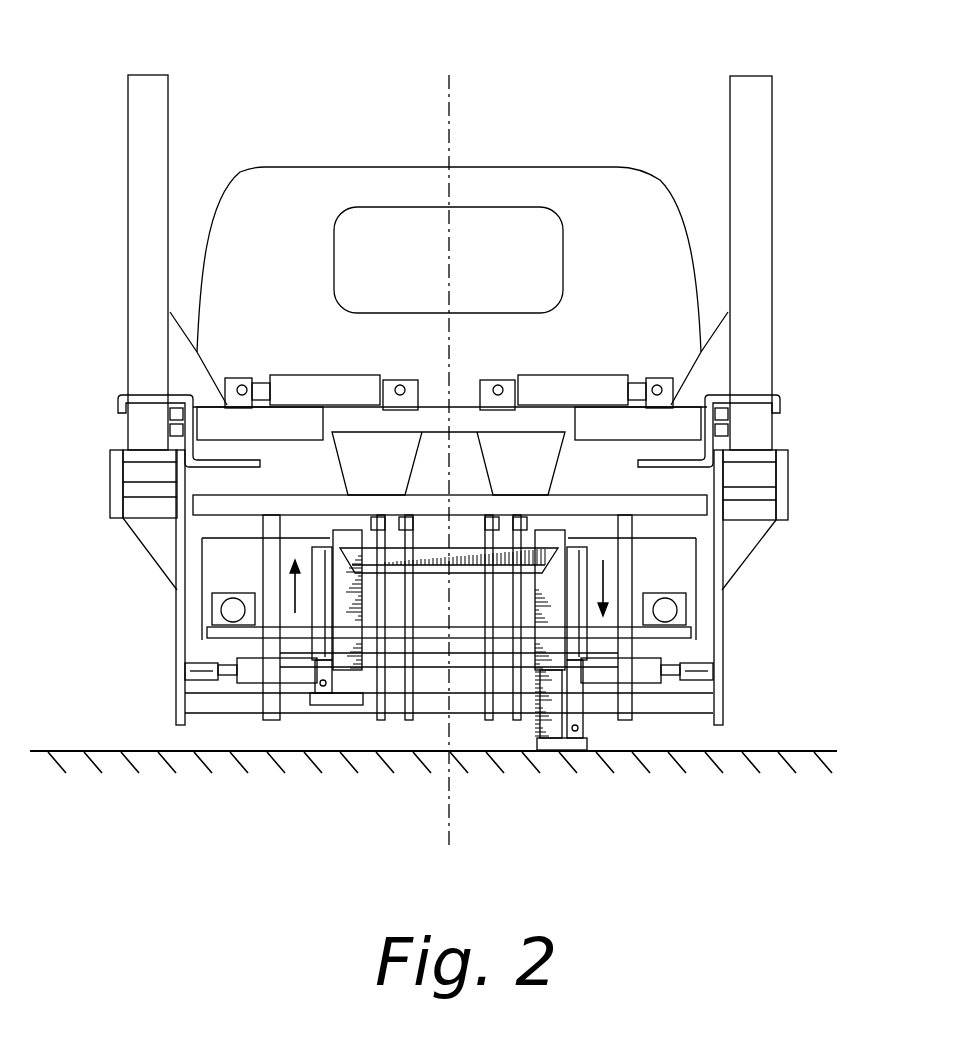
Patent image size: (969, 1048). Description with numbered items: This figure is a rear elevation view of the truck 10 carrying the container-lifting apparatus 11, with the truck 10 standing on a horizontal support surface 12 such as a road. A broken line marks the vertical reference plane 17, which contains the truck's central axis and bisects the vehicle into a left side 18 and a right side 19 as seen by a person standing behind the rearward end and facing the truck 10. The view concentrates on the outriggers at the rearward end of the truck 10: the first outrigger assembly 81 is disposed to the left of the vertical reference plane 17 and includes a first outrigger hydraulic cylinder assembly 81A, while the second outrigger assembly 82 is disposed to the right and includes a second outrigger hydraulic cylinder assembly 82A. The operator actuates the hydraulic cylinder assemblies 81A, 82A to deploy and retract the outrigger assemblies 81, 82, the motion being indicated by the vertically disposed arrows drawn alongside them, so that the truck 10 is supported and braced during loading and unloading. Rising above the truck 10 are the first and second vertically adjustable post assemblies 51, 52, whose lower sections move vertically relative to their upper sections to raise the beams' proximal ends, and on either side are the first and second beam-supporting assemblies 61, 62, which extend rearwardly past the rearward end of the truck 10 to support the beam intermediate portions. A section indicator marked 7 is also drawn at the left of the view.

The section line 7- 7 is at (98, 532).
The truck 10 is at (294, 158).
The container-lifting apparatus 11 is at (784, 230).
The horizontal support surface 12 is at (778, 751).
The vertical reference plane 17 is at (456, 89).
The left side 18 is at (128, 603).
The right side 19 is at (770, 603).
The first vertically adjustable post assembly 51 is at (140, 237).
The second vertically adjustable post assembly 52 is at (765, 237).
The first beam-supporting assembly 61 is at (100, 464).
The second beam-supporting assembly 62 is at (803, 464).
The first outrigger assembly 81 is at (357, 650).
The first outrigger hydraulic cylinder assembly 81A is at (320, 616).
The second outrigger assembly 82 is at (540, 650).
The second outrigger hydraulic cylinder assembly 82A is at (577, 617).